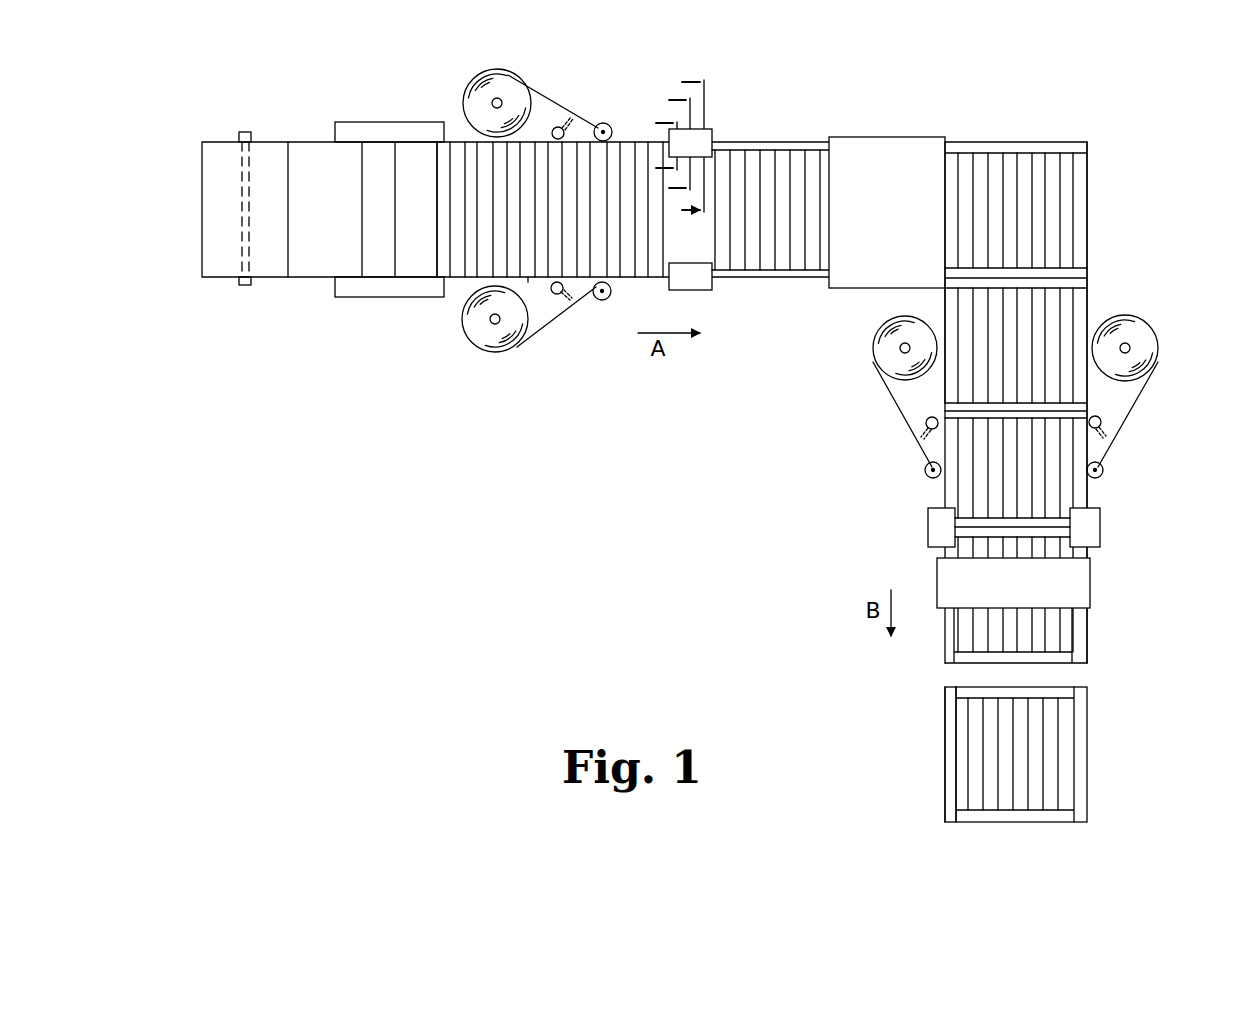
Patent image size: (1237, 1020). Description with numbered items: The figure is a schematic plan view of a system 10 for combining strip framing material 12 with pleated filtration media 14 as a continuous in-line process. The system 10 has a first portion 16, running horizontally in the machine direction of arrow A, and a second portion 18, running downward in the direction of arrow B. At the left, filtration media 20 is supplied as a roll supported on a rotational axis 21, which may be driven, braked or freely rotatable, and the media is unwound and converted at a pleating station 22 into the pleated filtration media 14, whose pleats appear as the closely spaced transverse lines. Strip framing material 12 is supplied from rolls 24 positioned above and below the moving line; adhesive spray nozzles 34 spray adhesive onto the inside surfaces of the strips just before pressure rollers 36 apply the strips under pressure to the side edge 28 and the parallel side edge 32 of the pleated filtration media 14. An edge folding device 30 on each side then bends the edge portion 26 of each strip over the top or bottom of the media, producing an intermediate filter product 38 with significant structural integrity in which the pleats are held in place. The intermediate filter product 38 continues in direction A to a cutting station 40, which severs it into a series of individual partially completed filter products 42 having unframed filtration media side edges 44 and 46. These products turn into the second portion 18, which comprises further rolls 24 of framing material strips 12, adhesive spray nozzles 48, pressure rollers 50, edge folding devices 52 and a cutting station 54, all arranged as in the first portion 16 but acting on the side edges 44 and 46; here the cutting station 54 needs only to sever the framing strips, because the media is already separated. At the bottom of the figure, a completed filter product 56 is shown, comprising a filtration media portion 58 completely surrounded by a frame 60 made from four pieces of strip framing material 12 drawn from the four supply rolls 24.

The system 10 is at (752, 360).
The strip framing material 12 is at (549, 102).
The pleated filtration media 14 is at (457, 268).
The first portion 16 is at (732, 73).
The second portion 18 is at (1158, 513).
The filtration media 20 is at (275, 144).
The rotational axis 21 is at (247, 131).
The pleating station 22 is at (350, 290).
The rolls 24 is at (497, 78).
The edge portion 26 is at (790, 142).
The side edge 28 is at (466, 140).
The edge folding device 30 is at (713, 133).
The parallel side edge 32 is at (528, 280).
The adhesive spray nozzles 34 is at (568, 325).
The pressure rollers 36 is at (605, 122).
The intermediate filter product 38 is at (814, 178).
The cutting station 40 is at (930, 137).
The partially completed filter products 42 is at (1082, 213).
The filtration media side edge 44 is at (1088, 244).
The filtration media side edge 46 is at (945, 298).
The adhesive spray nozzles 48 is at (933, 416).
The pressure rollers 50 is at (925, 469).
The edge folding devices 52 is at (935, 533).
The cutting station 54 is at (1088, 591).
The filter products 56 is at (1082, 762).
The filtration media portion 58 is at (998, 773).
The frame 60 is at (948, 736).